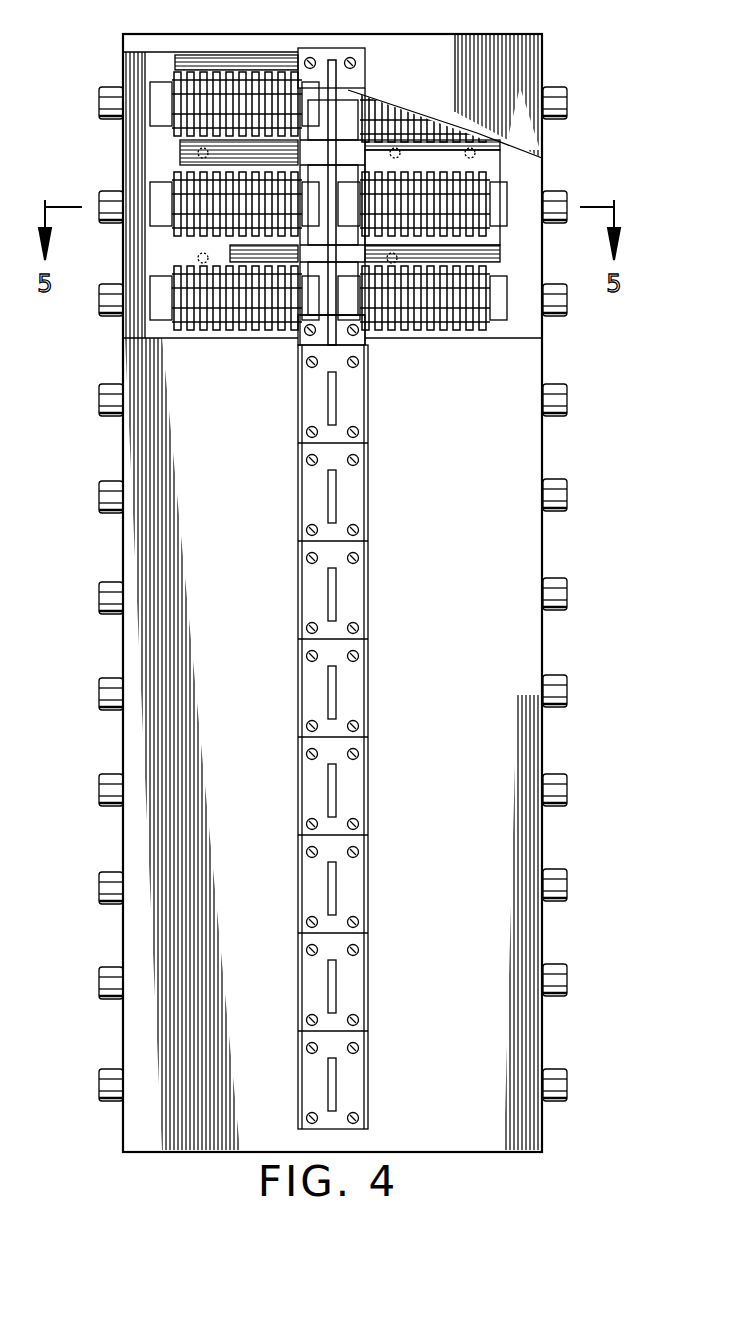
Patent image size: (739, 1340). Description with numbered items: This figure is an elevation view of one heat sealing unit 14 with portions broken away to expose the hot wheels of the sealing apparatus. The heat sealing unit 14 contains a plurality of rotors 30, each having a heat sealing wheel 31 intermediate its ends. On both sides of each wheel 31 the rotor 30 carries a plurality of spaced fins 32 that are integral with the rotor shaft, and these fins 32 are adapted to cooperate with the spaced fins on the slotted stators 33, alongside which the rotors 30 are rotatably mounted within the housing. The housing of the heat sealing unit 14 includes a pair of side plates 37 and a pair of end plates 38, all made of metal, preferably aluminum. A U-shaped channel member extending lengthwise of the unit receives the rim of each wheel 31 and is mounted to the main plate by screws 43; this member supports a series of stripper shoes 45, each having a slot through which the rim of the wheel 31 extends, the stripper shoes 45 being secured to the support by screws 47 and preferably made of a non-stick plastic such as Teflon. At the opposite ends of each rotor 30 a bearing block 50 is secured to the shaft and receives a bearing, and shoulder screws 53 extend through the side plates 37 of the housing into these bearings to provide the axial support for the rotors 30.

The heat sealing unit 14 is at (86, 656).
The rotor 30 is at (328, 187).
The heat sealing wheel 31 is at (340, 95).
The fins 32 is at (178, 92).
The slotted stator 33 is at (150, 195).
The side plate 37 is at (134, 66).
The end plate 38 is at (215, 50).
The screw 43 is at (306, 48).
The stripper shoe 45 is at (300, 440).
The screw 47 is at (312, 58).
The bearing block 50 is at (180, 142).
The shoulder screw 53 is at (98, 105).